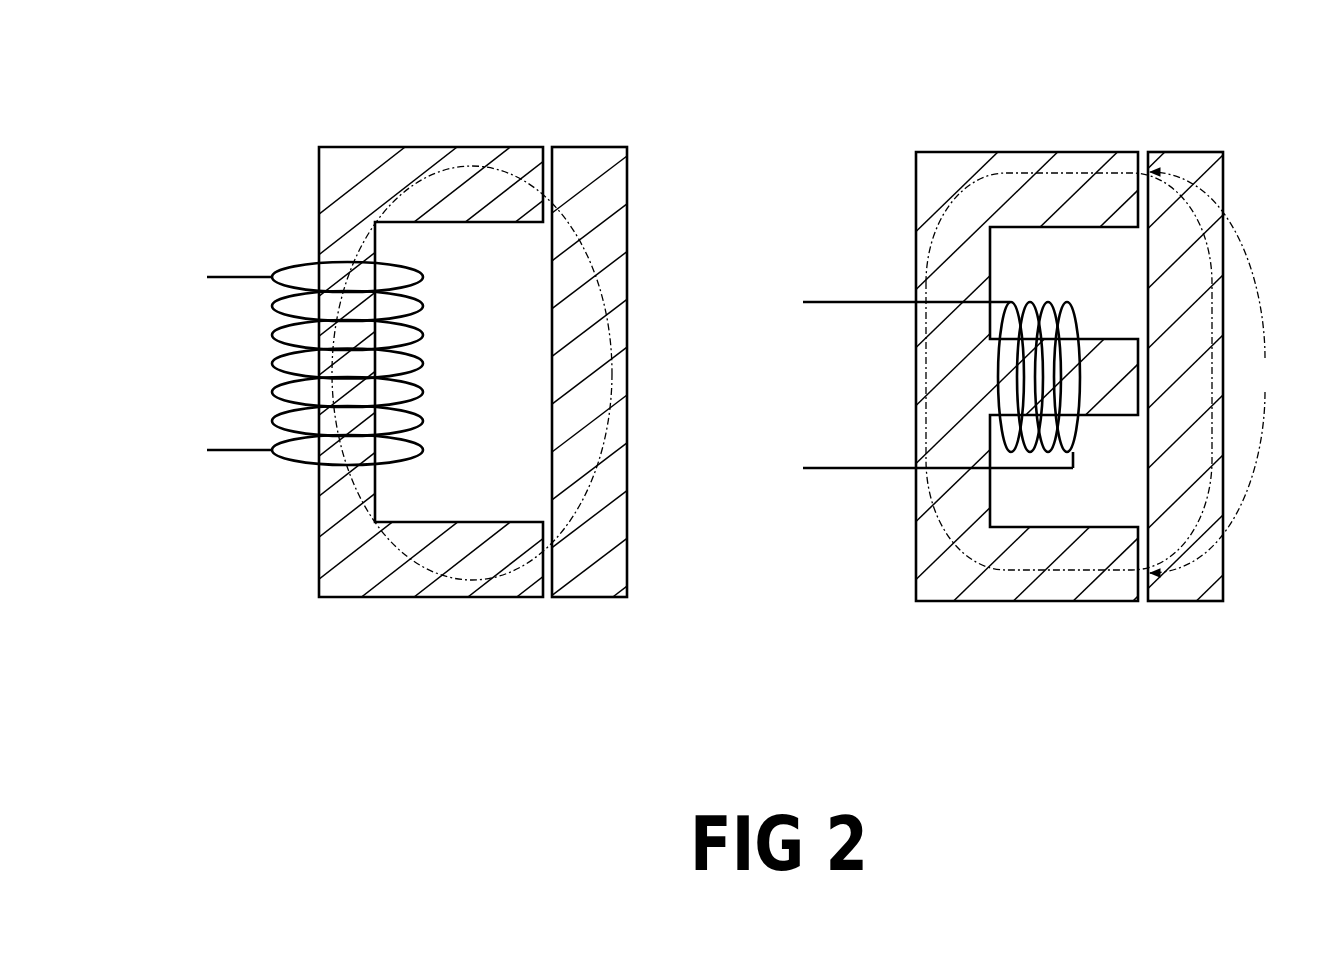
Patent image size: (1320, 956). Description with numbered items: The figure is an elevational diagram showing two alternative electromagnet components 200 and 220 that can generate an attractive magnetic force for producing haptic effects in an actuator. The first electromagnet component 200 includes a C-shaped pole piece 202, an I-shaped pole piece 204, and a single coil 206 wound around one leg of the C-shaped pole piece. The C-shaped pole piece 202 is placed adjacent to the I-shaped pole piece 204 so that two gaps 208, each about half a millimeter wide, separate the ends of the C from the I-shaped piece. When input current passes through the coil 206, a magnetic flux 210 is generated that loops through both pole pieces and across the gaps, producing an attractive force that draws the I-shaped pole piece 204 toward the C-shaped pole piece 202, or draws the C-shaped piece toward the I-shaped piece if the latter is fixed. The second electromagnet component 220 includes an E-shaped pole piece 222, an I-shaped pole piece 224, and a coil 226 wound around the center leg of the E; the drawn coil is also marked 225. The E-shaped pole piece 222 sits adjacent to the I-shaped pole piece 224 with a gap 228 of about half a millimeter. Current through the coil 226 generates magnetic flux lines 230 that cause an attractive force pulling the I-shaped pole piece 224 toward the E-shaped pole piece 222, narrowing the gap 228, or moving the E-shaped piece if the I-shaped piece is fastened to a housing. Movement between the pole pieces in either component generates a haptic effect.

The electromagnet component 200 is at (300, 90).
The C-shaped pole piece 202 is at (362, 180).
The I-shaped pole piece 204 is at (608, 180).
The single coil 206 is at (260, 283).
The gaps 208 is at (547, 240).
The magnetic flux 210 is at (380, 542).
The electromagnet component 220 is at (970, 115).
The E-shaped pole piece 222 is at (962, 188).
The I-shaped pole piece 224 is at (1209, 184).
The coil 225 is at (1118, 404).
The coil 226 is at (875, 308).
The gap 228 is at (1219, 372).
The magnetic flux lines 230 is at (940, 530).